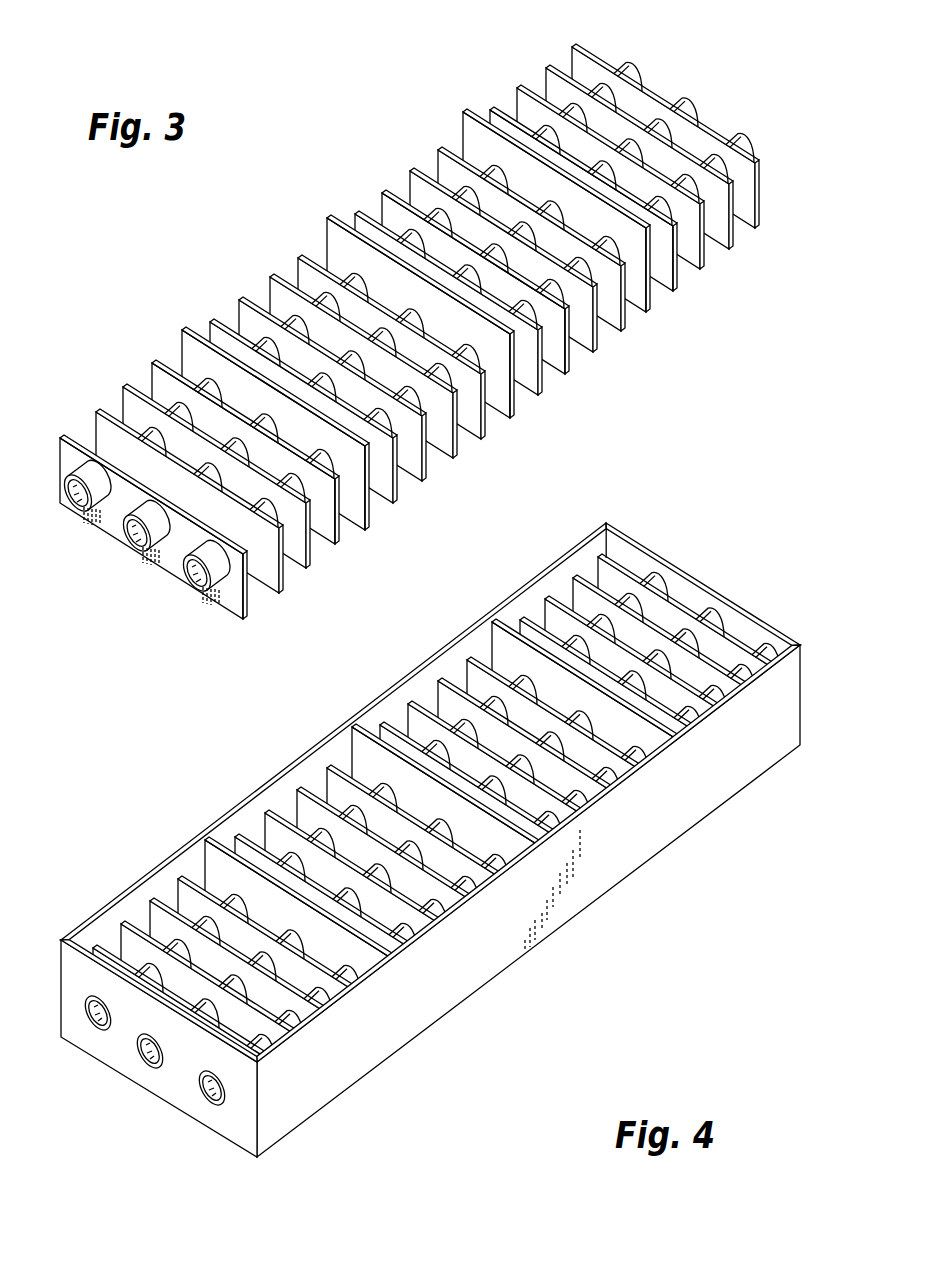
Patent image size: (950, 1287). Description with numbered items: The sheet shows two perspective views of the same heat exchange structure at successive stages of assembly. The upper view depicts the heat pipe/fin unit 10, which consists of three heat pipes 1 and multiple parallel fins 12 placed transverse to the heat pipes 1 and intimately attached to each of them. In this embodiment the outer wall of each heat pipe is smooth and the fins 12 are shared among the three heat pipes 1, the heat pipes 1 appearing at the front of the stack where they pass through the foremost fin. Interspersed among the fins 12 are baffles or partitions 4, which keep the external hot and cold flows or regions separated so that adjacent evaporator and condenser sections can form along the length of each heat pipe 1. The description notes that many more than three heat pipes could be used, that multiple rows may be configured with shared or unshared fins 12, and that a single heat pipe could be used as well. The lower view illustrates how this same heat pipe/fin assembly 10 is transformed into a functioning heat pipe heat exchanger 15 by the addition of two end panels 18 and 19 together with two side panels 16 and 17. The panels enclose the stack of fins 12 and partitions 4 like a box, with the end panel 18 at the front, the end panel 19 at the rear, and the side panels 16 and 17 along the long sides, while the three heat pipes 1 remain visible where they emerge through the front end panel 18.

In FIG. 3, the heat pipe 1 is at (90, 487).
In FIG. 4, the heat pipe 1 is at (98, 1015).
In FIG. 3, the baffle or partition 4 is at (647, 313).
In FIG. 4, the baffle or partition 4 is at (499, 648).
In FIG. 3, the heat pipe/fin unit 10 is at (237, 266).
In FIG. 3, the fin 12 is at (490, 111).
In FIG. 4, the fin 12 is at (580, 598).
In FIG. 4, the heat pipe heat exchanger (HPHE) 15 is at (404, 840).
In FIG. 4, the side panel 16 is at (703, 800).
In FIG. 4, the side panel 17 is at (408, 678).
In FIG. 4, the end panel 18 is at (68, 993).
In FIG. 4, the end panel 19 is at (703, 583).